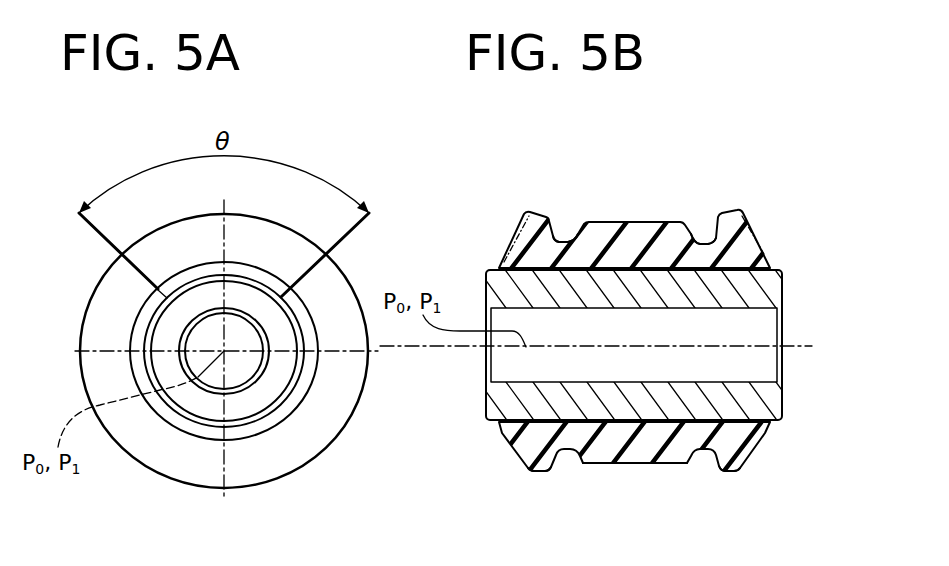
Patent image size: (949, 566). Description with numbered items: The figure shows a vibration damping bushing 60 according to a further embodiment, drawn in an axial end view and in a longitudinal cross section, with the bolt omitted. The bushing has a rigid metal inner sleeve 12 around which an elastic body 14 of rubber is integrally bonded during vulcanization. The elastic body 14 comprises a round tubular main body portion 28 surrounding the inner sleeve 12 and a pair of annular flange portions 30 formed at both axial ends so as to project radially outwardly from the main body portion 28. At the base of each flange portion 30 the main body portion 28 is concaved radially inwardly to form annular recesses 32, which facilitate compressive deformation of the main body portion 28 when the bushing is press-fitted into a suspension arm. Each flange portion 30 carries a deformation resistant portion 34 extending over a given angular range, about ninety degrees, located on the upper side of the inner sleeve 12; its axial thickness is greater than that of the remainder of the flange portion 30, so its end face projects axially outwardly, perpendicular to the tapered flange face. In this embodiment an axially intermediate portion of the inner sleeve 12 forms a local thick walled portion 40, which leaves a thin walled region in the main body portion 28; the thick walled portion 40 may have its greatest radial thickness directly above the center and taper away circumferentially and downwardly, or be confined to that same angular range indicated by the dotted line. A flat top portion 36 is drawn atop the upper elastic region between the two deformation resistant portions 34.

In FIG. 5A, the inner sleeve 12 is at (292, 397).
In FIG. 5B, the inner sleeve 12 is at (497, 405).
In FIG. 5A, the elastic body 14 is at (314, 460).
In FIG. 5B, the elastic body 14 is at (650, 468).
In FIG. 5B, the main body portion 28 is at (627, 464).
In FIG. 5A, the annular flange portions 30 is at (157, 452).
In FIG. 5B, the annular flange portions 30 is at (543, 476).
In FIG. 5B, the annular recesses 32 is at (577, 244).
In FIG. 5A, the deformation resistant portion 34 is at (180, 243).
In FIG. 5B, the deformation resistant portion 34 is at (514, 231).
In FIG. 5B, the flat top portion 36 is at (613, 228).
In FIG. 5A, the thick walled portion 40 is at (258, 271).
In FIG. 5B, the thick walled portion 40 is at (667, 260).
In FIG. 5A, the vibration damping bushing 60 is at (296, 152).
In FIG. 5B, the vibration damping bushing 60 is at (648, 158).